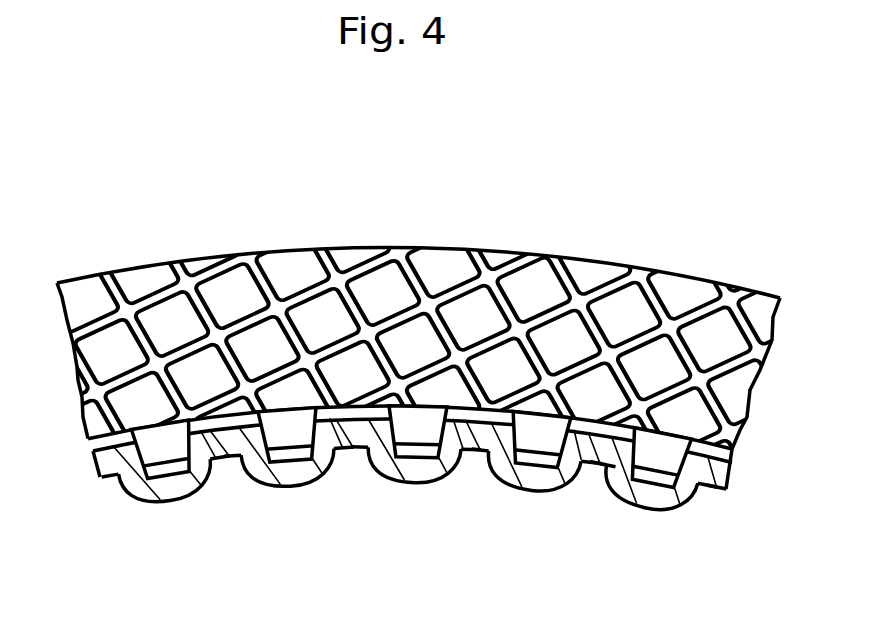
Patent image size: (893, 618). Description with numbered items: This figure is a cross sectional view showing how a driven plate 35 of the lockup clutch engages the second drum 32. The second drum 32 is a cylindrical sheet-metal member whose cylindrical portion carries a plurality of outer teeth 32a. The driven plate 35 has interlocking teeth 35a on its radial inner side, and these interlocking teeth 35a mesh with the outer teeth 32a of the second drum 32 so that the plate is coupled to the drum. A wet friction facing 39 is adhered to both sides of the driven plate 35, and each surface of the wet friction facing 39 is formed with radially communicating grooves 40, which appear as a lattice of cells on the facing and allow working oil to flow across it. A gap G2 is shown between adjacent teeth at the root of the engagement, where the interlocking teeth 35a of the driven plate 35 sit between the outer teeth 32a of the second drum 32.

The driven plate 35 is at (405, 247).
The radially communicating grooves 40 is at (335, 248).
The wet friction facing 39 is at (480, 317).
The second drum 32 is at (399, 499).
The outer teeth 32a is at (352, 437).
The interlocking teeth 35a is at (550, 433).
The gap G2 is at (237, 420).